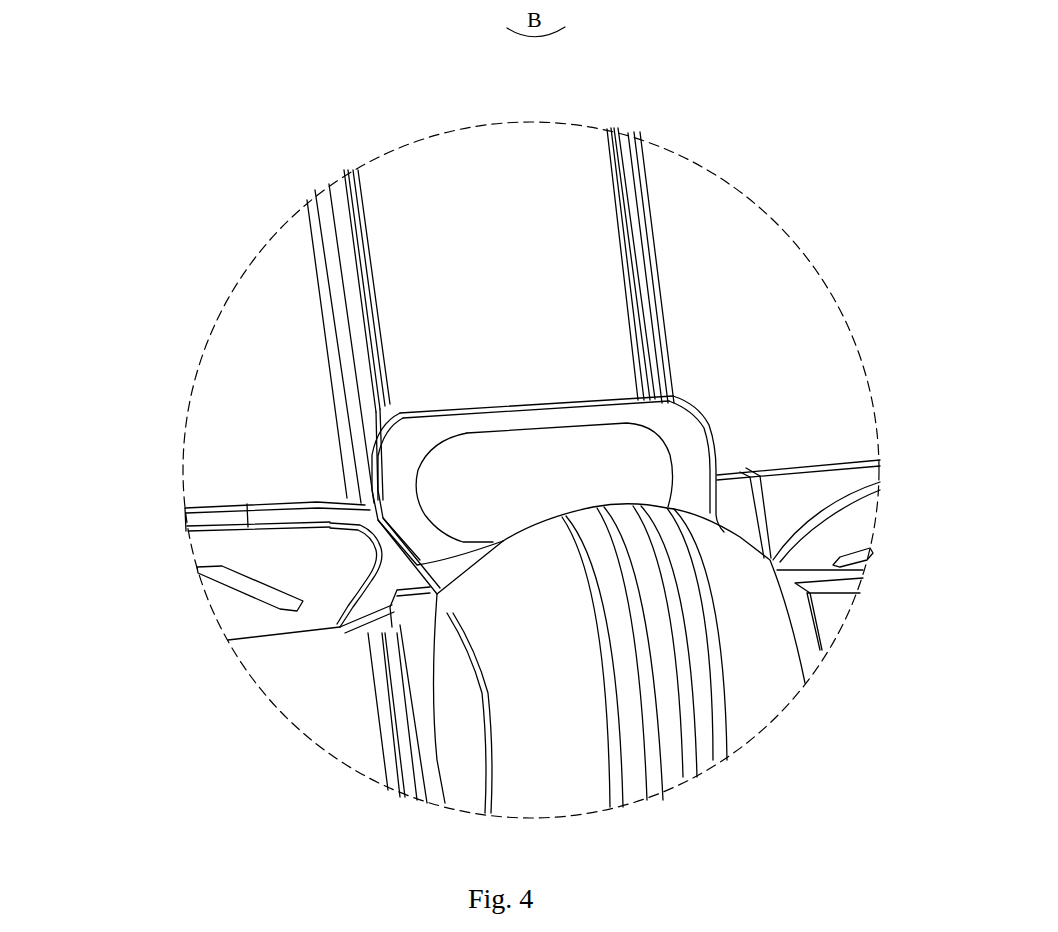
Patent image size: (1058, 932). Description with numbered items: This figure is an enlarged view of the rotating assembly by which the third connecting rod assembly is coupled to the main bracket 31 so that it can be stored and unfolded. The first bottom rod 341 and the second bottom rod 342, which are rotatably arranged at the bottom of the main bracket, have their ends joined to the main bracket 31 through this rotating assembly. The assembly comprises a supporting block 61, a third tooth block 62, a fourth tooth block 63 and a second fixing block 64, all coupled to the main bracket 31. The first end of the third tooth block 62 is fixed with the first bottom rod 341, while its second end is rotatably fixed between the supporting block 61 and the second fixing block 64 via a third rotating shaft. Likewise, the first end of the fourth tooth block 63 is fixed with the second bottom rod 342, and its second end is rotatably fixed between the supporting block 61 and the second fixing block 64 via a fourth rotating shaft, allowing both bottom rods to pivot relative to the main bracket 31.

The main bracket 31 is at (648, 203).
The supporting block 61 is at (623, 380).
The third tooth block 62 is at (350, 495).
The fourth tooth block 63 is at (742, 466).
The second fixing block 64 is at (667, 424).
The first bottom rod 341 is at (220, 523).
The second bottom rod 342 is at (876, 460).